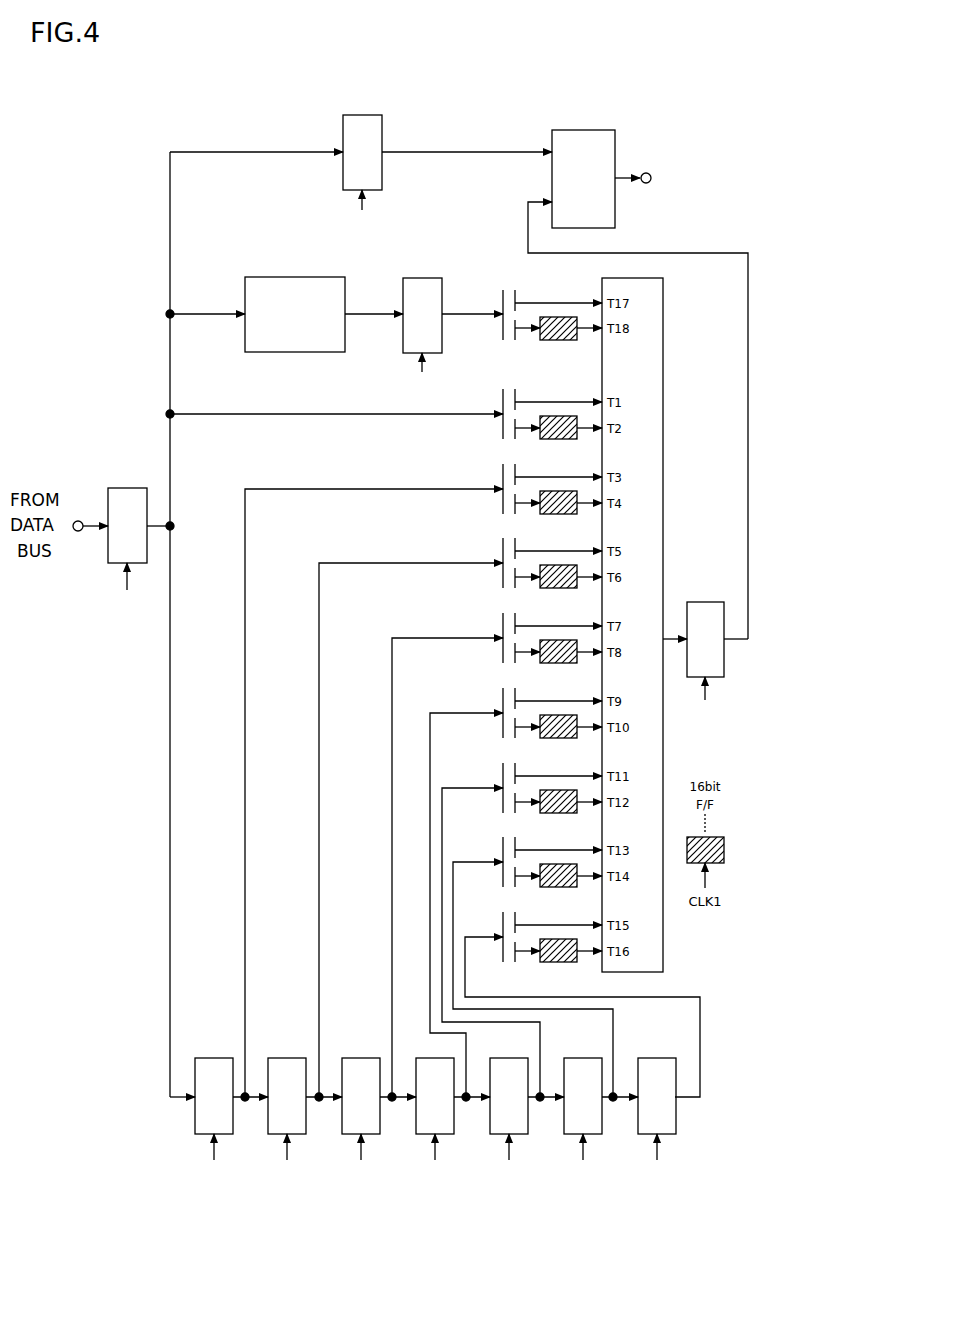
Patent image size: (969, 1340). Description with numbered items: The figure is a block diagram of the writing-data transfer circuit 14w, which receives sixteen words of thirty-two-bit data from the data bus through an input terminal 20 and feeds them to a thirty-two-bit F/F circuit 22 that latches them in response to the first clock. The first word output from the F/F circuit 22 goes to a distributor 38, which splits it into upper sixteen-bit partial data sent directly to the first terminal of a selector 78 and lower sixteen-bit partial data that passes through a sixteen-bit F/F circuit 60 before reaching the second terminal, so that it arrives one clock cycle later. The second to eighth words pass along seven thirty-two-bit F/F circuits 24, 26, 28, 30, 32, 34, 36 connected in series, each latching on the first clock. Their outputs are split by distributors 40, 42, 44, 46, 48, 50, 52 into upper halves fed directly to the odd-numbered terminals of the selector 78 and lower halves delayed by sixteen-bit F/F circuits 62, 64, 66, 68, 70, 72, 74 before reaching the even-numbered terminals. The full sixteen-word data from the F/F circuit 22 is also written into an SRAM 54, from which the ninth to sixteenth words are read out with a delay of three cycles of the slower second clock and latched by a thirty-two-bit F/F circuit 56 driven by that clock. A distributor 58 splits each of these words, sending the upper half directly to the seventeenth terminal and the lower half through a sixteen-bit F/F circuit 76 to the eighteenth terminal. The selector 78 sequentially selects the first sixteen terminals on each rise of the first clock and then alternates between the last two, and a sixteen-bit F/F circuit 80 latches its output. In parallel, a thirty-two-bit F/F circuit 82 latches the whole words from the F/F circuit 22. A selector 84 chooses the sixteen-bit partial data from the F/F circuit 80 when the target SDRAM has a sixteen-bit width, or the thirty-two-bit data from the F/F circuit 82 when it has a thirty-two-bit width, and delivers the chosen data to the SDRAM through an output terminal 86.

The writing-data transfer circuit 14w is at (104, 309).
The input terminal 20 is at (78, 533).
The F/F circuit 22 is at (120, 488).
The F/F circuit 24 is at (208, 1058).
The F/F circuit 26 is at (282, 1058).
The F/F circuit 28 is at (356, 1058).
The F/F circuit 30 is at (430, 1058).
The F/F circuit 32 is at (504, 1058).
The F/F circuit 34 is at (578, 1058).
The F/F circuit 36 is at (652, 1058).
The distributor 38 is at (503, 432).
The distributor 40 is at (503, 507).
The distributor 42 is at (503, 581).
The distributor 44 is at (503, 656).
The distributor 46 is at (503, 731).
The distributor 48 is at (503, 806).
The distributor 50 is at (503, 880).
The distributor 52 is at (503, 956).
The SRAM 54 is at (275, 277).
The F/F circuit 56 is at (422, 278).
The distributor 58 is at (503, 287).
The F/F circuit 60 is at (557, 440).
The F/F circuit 62 is at (557, 515).
The F/F circuit 64 is at (557, 589).
The F/F circuit 66 is at (557, 664).
The F/F circuit 68 is at (557, 739).
The F/F circuit 70 is at (557, 814).
The F/F circuit 72 is at (557, 888).
The F/F circuit 74 is at (557, 963).
The F/F circuit 76 is at (560, 341).
The selector 78 is at (663, 932).
The F/F circuit 80 is at (705, 602).
The F/F circuit 82 is at (343, 130).
The selector 84 is at (552, 140).
The output terminal 86 is at (648, 172).